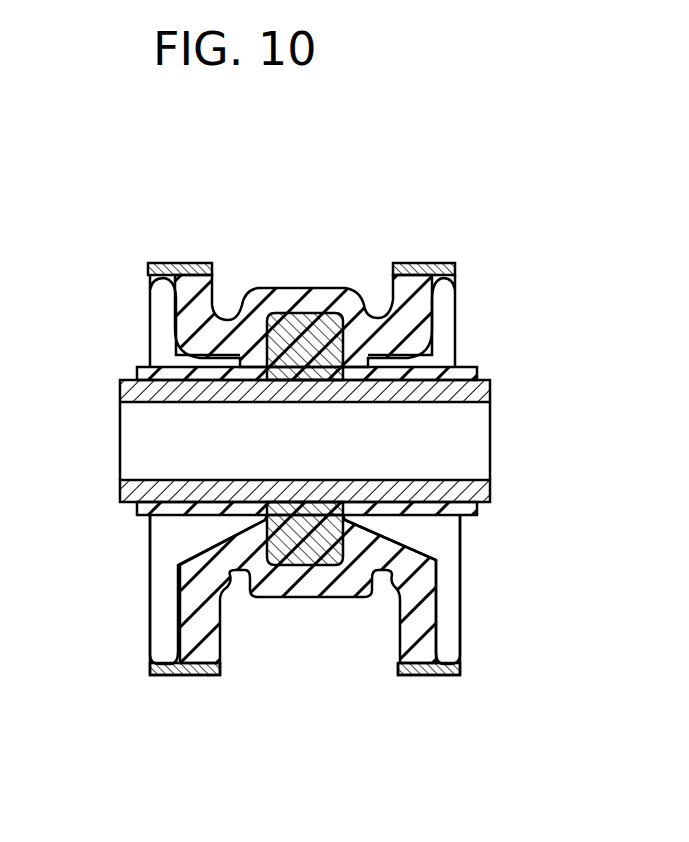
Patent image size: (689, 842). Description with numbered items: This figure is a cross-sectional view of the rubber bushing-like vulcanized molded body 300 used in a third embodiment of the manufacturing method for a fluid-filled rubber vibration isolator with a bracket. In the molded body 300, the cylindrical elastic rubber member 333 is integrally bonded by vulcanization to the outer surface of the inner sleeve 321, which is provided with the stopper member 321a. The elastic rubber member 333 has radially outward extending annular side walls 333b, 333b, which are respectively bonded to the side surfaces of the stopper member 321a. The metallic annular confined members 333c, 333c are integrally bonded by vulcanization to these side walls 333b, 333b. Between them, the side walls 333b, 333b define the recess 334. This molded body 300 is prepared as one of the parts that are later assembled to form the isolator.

The rubber bushing-like vulcanized molded body 300 is at (173, 697).
The inner sleeve 321 is at (443, 392).
The stopper member 321a is at (288, 335).
The cylindrical elastic rubber member 333 is at (178, 605).
The annular side wall 333b is at (188, 306).
The metallic annular confined member 333c is at (174, 262).
The recess 334 is at (222, 630).